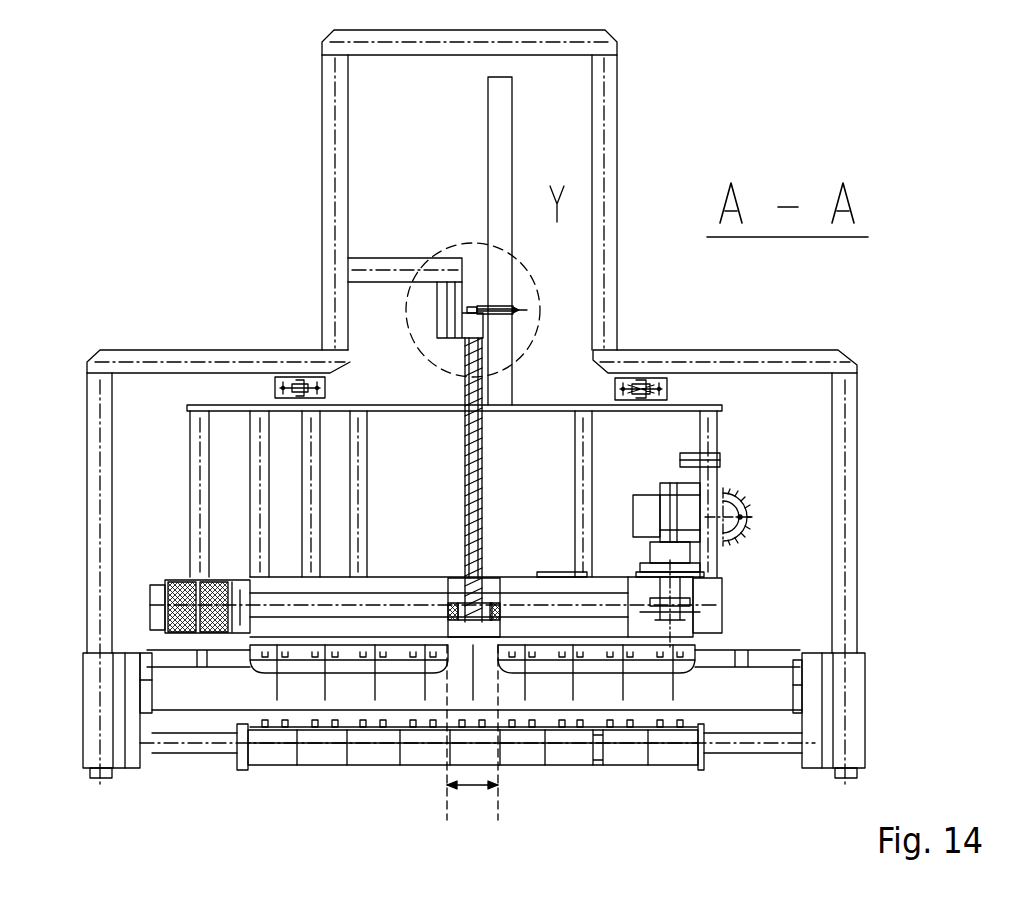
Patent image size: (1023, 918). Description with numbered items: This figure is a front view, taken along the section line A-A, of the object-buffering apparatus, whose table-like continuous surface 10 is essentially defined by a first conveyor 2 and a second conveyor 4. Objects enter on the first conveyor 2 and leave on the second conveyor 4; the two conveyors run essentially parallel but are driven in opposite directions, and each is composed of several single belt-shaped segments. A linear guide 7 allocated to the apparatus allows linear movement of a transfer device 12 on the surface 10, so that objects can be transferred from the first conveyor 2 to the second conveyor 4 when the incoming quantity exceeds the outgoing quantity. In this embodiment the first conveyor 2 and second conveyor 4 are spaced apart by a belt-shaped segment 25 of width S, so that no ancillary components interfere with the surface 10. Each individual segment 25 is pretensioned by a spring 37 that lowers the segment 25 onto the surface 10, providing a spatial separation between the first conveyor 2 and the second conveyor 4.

The first conveyor 2 is at (266, 668).
The second conveyor 4 is at (683, 669).
The linear guide 7 is at (281, 378).
The surface 10 is at (644, 650).
The transfer device 12 is at (207, 471).
The belt-shaped segment 25 is at (452, 521).
The spring 37 is at (477, 450).
The width S is at (470, 788).